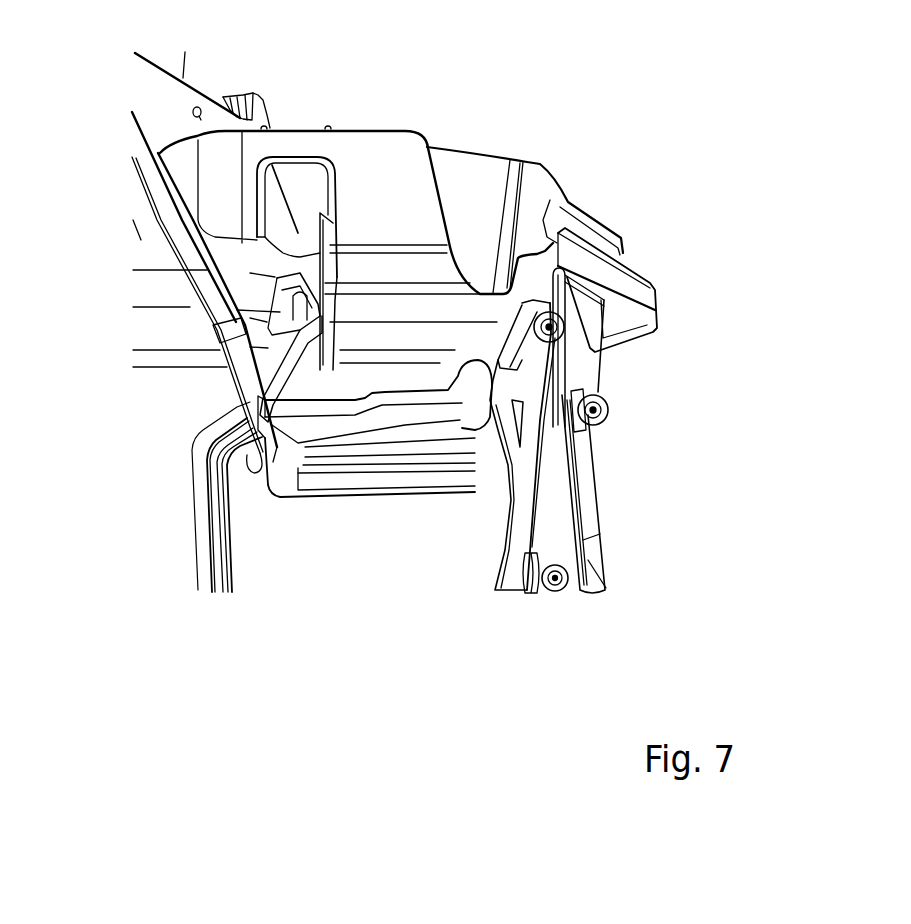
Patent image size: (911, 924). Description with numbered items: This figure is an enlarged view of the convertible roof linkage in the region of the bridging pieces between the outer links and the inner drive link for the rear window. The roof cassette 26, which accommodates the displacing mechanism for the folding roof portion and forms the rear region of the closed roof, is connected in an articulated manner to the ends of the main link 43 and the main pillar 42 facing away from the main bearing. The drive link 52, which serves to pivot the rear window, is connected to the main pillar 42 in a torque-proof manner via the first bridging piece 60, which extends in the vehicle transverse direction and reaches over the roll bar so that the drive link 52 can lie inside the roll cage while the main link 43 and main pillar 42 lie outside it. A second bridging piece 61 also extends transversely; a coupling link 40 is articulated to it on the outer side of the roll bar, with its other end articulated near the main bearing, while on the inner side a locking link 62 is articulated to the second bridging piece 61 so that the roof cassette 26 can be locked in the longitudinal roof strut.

The roof cassette 26 is at (540, 190).
The coupling link 40 is at (548, 560).
The main pillar 42 is at (508, 587).
The main link 43 is at (583, 497).
The drive link 52 is at (223, 583).
The first bridging piece 60 is at (417, 420).
The second bridging piece 61 is at (327, 480).
The locking link 62 is at (207, 277).